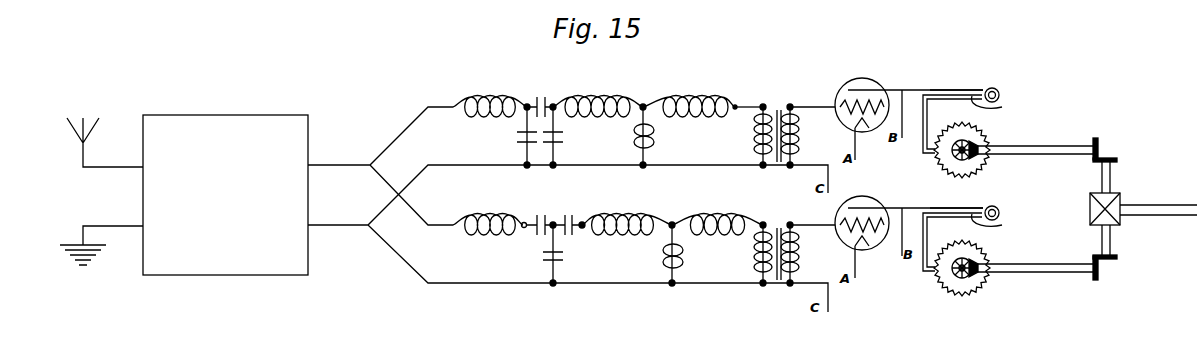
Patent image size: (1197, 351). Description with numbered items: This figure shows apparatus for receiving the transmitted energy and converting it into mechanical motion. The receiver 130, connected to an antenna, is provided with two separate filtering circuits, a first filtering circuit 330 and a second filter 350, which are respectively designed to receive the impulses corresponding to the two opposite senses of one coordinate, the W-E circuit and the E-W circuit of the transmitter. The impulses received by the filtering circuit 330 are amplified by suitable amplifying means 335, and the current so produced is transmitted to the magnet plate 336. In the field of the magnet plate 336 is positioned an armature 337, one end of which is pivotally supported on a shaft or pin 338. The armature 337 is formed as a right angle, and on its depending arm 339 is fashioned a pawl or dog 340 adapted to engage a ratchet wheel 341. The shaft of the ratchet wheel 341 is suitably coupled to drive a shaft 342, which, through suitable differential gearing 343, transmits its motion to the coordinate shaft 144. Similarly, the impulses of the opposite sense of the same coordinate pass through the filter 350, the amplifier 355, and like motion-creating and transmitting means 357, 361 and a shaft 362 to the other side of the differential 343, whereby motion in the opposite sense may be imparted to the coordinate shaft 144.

The receiver 130 is at (225, 195).
The filtering circuit 330 is at (403, 130).
The filter 350 is at (390, 255).
The amplifying means 335 is at (858, 78).
The amplifier 355 is at (838, 210).
The magnet plate 336 is at (960, 88).
The armature 337 is at (1002, 108).
The shaft or pin 338 is at (1001, 93).
The depending arm 339 is at (922, 138).
The pawl or dog 340 is at (927, 155).
The ratchet wheel 341 is at (983, 166).
The shaft 342 is at (1060, 145).
The differential gearing 343 is at (1120, 198).
The coordinate shaft 144 is at (1160, 217).
The motion-creating and transmitting means 357 is at (980, 222).
The motion-creating and transmitting means 361 is at (984, 285).
The shaft 362 is at (1062, 270).